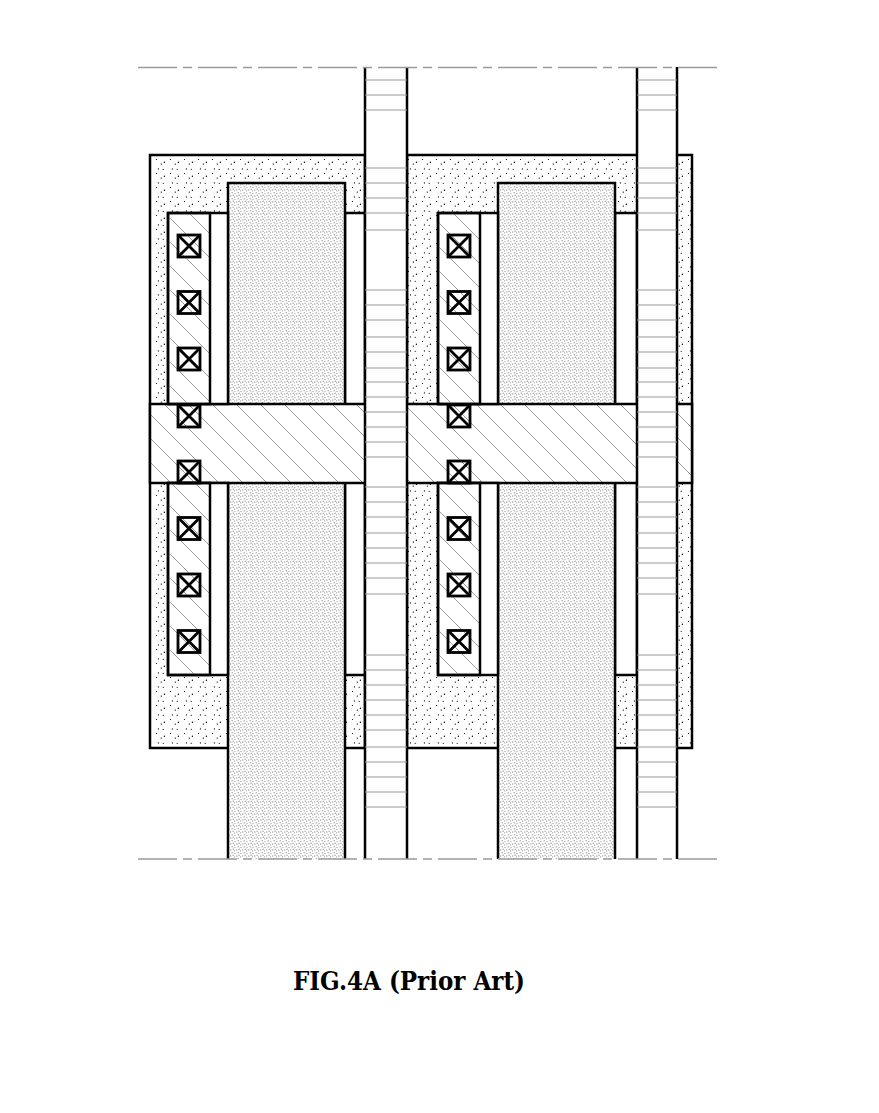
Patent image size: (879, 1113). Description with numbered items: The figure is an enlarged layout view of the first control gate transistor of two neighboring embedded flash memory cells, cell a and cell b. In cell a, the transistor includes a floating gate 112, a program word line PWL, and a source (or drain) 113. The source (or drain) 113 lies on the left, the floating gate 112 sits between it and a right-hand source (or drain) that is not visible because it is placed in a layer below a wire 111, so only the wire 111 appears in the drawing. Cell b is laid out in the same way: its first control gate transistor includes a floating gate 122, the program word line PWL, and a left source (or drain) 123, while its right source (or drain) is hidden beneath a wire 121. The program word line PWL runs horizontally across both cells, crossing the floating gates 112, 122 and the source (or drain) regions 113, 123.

The wire 111 is at (383, 840).
The floating gate 112 is at (277, 848).
The source (or drain) 113 is at (182, 560).
The wire 121 is at (652, 835).
The floating gate 122 is at (600, 533).
The source (or drain) 123 is at (456, 218).
The program word line PWL is at (128, 448).